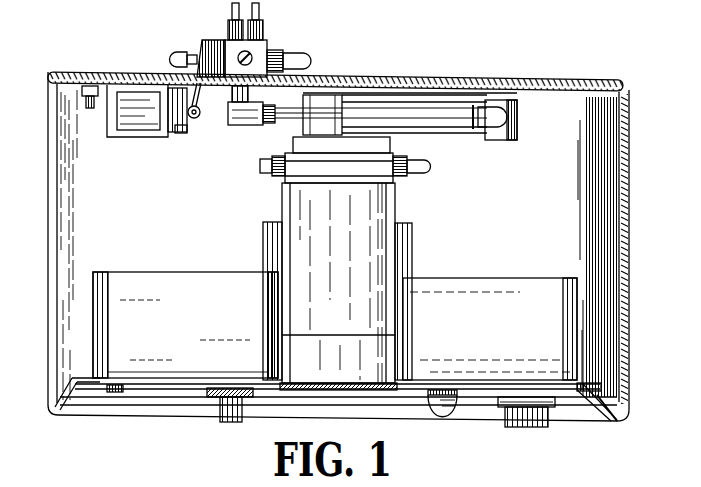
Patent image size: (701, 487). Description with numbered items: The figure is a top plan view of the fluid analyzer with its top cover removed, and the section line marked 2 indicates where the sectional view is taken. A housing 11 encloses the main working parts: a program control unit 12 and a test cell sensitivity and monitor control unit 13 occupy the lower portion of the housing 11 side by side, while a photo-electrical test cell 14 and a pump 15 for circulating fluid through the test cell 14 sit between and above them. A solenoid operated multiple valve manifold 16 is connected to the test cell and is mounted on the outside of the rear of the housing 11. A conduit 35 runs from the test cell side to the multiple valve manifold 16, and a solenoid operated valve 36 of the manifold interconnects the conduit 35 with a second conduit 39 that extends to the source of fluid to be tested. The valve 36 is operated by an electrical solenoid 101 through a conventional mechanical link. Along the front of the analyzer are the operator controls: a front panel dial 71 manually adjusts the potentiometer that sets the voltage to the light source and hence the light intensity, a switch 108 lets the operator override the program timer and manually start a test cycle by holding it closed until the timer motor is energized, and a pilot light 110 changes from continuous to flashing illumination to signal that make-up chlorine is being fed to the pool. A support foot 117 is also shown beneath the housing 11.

The section line 2- 2 is at (14, 28).
The housing 11 is at (626, 311).
The program control unit 12 is at (193, 334).
The test cell sensitivity and monitor control unit 13 is at (492, 340).
The photo-electrical test cell 14 is at (482, 140).
The pump 15 is at (397, 212).
The solenoid operated multiple valve manifold 16 is at (267, 43).
The conduit 35 is at (436, 137).
The solenoid operated valve 36 is at (212, 40).
The second conduit 39 is at (306, 53).
The front panel dial 71 is at (535, 427).
The electrical solenoid 101 is at (127, 134).
The switch 108 is at (123, 392).
The pilot light 110 is at (447, 414).
The support foot 117 is at (223, 422).